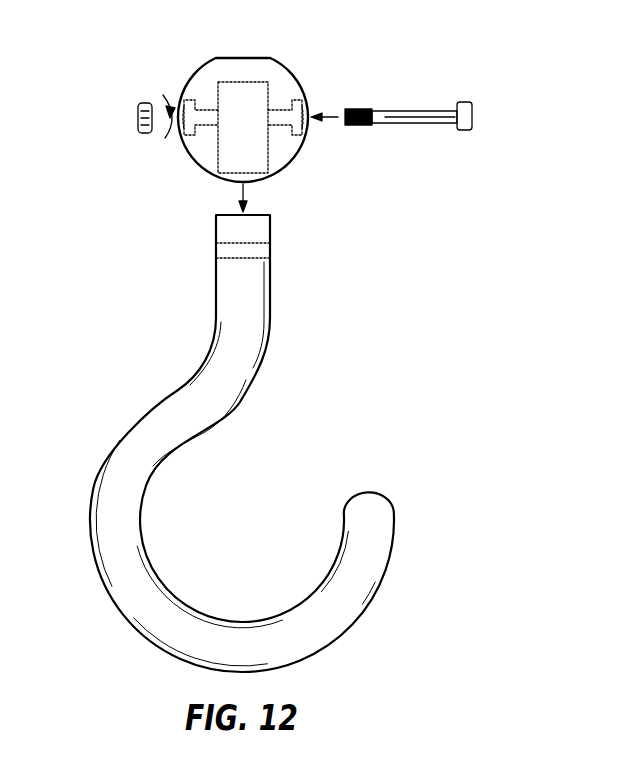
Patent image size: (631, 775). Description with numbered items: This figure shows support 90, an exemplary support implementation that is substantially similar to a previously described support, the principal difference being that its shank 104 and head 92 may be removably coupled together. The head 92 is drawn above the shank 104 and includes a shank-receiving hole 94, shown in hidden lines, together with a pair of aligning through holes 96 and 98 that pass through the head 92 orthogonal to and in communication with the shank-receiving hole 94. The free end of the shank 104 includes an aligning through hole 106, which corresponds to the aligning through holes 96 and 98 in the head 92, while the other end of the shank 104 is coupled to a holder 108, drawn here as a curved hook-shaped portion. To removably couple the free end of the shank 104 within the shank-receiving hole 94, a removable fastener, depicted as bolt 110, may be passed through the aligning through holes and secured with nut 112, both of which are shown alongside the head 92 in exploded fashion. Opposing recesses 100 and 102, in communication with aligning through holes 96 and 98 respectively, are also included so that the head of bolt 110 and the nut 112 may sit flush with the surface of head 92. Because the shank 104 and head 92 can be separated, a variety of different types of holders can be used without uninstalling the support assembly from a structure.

The support 90 is at (317, 336).
The head 92 is at (272, 99).
The shank-receiving hole 94 is at (245, 92).
The aligning through hole 96 is at (280, 113).
The aligning through hole 98 is at (207, 117).
The recess 100 is at (303, 138).
The recess 102 is at (181, 133).
The shank 104 is at (250, 443).
The aligning through hole 106 is at (258, 250).
The holder 108 is at (307, 412).
The bolt 110 is at (397, 118).
The nut 112 is at (137, 120).